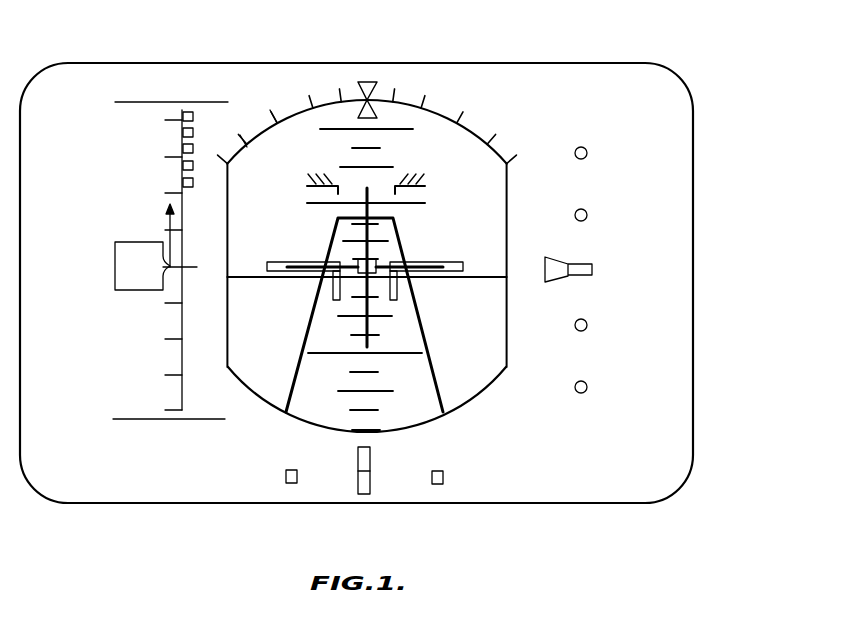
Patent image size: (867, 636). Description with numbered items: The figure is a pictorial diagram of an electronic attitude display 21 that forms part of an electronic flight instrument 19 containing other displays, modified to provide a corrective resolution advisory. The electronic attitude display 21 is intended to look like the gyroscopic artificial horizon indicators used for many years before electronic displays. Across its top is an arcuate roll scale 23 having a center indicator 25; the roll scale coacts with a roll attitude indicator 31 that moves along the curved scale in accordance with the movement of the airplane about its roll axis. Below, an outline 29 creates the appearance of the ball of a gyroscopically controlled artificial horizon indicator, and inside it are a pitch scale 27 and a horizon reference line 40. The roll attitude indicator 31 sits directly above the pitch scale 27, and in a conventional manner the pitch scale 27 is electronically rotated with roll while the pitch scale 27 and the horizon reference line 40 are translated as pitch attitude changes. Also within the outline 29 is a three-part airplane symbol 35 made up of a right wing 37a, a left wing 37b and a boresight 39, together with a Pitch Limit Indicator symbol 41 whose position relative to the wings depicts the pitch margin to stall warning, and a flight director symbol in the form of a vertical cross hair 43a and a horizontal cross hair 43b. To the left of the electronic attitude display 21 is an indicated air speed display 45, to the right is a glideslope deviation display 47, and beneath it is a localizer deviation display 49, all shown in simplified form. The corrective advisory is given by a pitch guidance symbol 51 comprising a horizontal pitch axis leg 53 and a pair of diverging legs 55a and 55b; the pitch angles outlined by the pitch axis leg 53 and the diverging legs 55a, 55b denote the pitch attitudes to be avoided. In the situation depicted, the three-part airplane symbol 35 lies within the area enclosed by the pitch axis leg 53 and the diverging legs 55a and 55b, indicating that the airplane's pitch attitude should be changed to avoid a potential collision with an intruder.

The electronic flight instrument 19 is at (693, 406).
The electronic attitude display 21 is at (552, 190).
The arcuate roll scale 23 is at (328, 99).
The center indicator 25 is at (368, 81).
The pitch scale 27 is at (402, 100).
The outline 29 is at (507, 320).
The roll attitude indicator 31 is at (373, 157).
The three-part airplane symbol 35 is at (292, 289).
The right wing 37a is at (506, 215).
The left wing 37b is at (296, 262).
The boresight 39 is at (392, 292).
The horizon reference line 40 is at (490, 378).
The Pitch Limit Indicator (PLI) symbol 41 is at (320, 184).
The vertical cross hair 43a is at (369, 198).
The horizontal cross hair 43b is at (430, 262).
The indicated air speed display 45 is at (130, 352).
The glideslope deviation display 47 is at (612, 253).
The localizer deviation display 49 is at (415, 476).
The pitch guidance symbol 51 is at (408, 232).
The pitch axis leg 53 is at (350, 217).
The diverging leg 55a is at (293, 383).
The diverging leg 55b is at (438, 383).